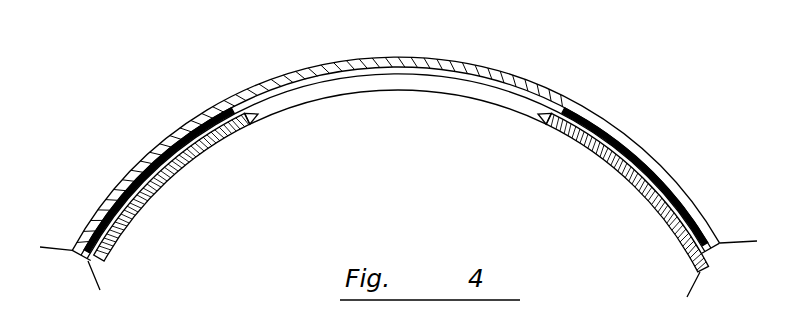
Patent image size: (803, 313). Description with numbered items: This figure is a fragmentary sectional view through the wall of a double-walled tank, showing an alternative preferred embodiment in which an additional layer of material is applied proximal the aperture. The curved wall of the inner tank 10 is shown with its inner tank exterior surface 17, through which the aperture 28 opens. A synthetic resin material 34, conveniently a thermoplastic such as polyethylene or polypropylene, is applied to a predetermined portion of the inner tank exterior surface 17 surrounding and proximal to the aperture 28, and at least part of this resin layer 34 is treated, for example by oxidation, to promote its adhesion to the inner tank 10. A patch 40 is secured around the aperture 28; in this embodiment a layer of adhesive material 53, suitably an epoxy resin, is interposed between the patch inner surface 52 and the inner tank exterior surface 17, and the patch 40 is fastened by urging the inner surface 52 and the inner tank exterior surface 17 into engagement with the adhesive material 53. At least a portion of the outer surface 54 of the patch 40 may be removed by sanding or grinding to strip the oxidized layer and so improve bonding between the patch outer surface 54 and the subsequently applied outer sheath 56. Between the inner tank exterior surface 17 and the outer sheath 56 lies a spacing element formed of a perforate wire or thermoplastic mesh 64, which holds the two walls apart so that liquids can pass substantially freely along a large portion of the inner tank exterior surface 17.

The inner tank 10 is at (182, 163).
The inner tank exterior surface 17 is at (108, 190).
The aperture 28 is at (249, 121).
The synthetic resin material layer 34 is at (228, 100).
The patch 40 is at (585, 135).
The patch inner surface 52 is at (221, 119).
The adhesive material 53 is at (165, 184).
The patch outer surface 54 is at (200, 120).
The outer sheath 56 is at (157, 140).
The mesh 64 is at (143, 189).